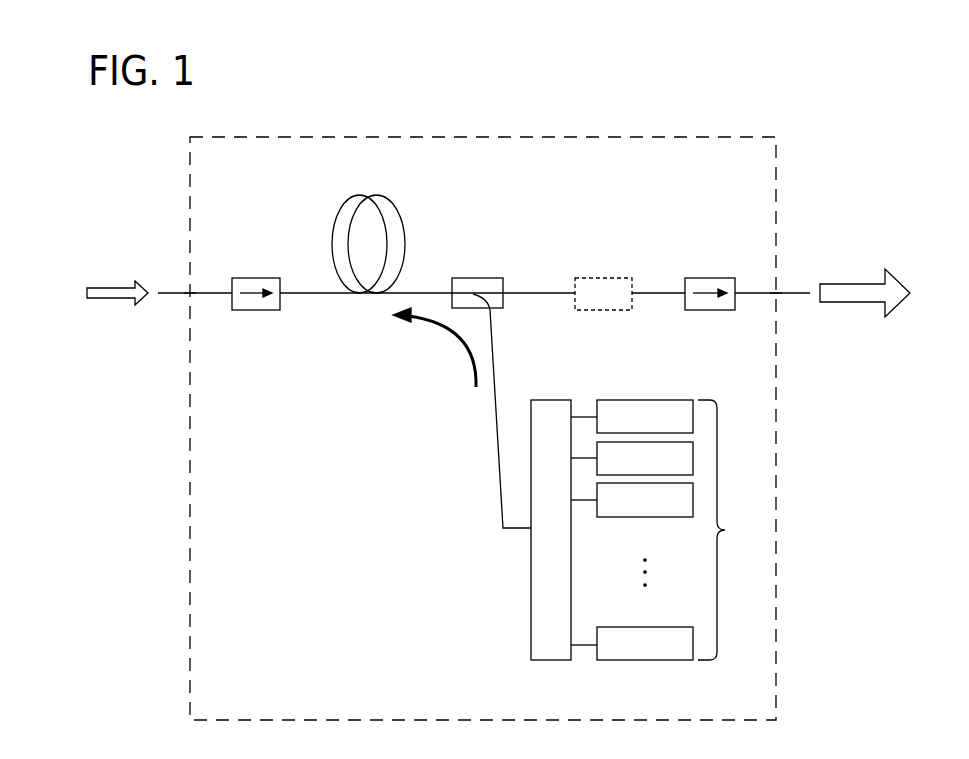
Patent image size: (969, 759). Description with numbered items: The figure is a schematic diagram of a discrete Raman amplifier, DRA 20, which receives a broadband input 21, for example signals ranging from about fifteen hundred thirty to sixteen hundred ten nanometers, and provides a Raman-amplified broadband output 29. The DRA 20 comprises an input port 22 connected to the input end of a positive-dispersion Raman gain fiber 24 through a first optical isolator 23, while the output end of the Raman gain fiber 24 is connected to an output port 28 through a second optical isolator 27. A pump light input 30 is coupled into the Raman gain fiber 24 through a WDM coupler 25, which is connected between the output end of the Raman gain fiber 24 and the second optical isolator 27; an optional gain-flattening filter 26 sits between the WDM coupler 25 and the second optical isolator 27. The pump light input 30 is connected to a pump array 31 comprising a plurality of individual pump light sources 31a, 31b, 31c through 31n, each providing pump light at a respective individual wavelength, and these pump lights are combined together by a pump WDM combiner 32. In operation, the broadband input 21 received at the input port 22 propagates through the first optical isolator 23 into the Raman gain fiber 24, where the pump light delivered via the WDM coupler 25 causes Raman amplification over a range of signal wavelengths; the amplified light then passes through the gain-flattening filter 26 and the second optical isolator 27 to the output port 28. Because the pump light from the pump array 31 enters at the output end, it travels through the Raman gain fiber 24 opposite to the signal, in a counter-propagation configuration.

The discrete Raman amplifier 20 is at (492, 126).
The broadband input 21 is at (128, 287).
The input port 22 is at (190, 291).
The first optical isolator 23 is at (243, 278).
The positive-dispersion Raman gain fiber 24 is at (340, 213).
The WDM coupler 25 is at (503, 280).
The gain-flattening filter 26 is at (627, 278).
The second optical isolator 27 is at (720, 278).
The output port 28 is at (776, 292).
The Raman-amplified broadband output 29 is at (850, 285).
The pump light input 30 is at (495, 355).
The pump array 31 is at (727, 530).
The pump light source 31a is at (683, 425).
The pump light source 31b is at (683, 467).
The pump light source 31c is at (683, 509).
The pump light source 31n is at (683, 653).
The pump WDM combiner 32 is at (562, 400).